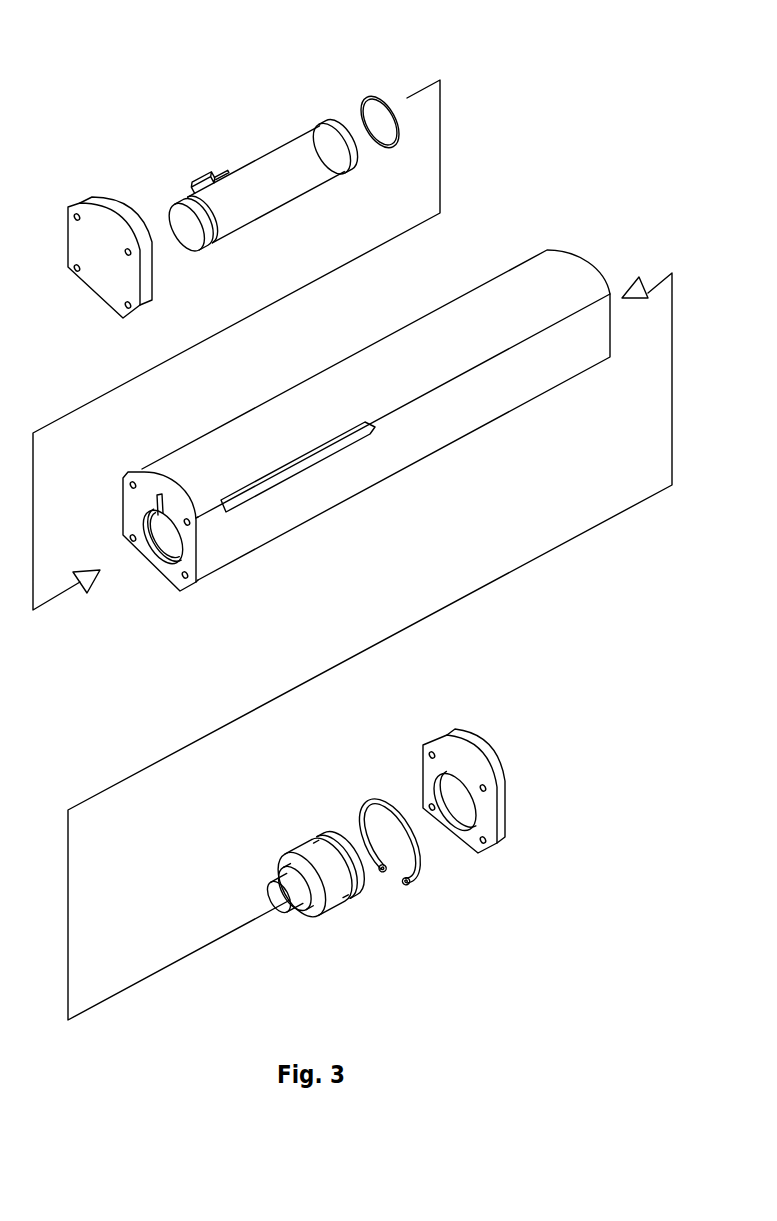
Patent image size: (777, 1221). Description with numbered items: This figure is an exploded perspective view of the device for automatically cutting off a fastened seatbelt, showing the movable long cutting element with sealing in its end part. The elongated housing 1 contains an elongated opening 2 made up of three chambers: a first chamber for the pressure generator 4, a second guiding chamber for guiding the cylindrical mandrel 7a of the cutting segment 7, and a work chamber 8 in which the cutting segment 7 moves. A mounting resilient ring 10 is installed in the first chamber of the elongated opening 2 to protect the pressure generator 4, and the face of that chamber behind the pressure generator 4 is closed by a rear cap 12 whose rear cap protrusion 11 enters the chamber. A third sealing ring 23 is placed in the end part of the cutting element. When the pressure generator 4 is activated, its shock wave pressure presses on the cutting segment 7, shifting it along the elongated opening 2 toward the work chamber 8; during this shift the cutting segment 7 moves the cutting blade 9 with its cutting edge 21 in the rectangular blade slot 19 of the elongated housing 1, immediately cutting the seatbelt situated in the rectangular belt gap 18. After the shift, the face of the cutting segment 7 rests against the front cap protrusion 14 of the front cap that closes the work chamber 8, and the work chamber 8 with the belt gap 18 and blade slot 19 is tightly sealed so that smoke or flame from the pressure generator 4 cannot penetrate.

The elongated housing 1 is at (338, 482).
The elongated opening 2 is at (130, 642).
The pressure generator 4 is at (340, 883).
The cutting segment 7 is at (215, 172).
The cylindrical mandrel 7a is at (278, 175).
The work chamber 8 is at (158, 535).
The cutting blade 9 is at (210, 177).
The mounting resilient ring 10 is at (403, 882).
The rear cap protrusion 11 is at (453, 805).
The rear cap 12 is at (490, 825).
The front cap protrusion 14 is at (105, 232).
The rectangular belt gap 18 is at (307, 450).
The rectangular blade slot 19 is at (147, 477).
The cutting edge 21 is at (192, 188).
The third sealing ring 23 is at (360, 105).